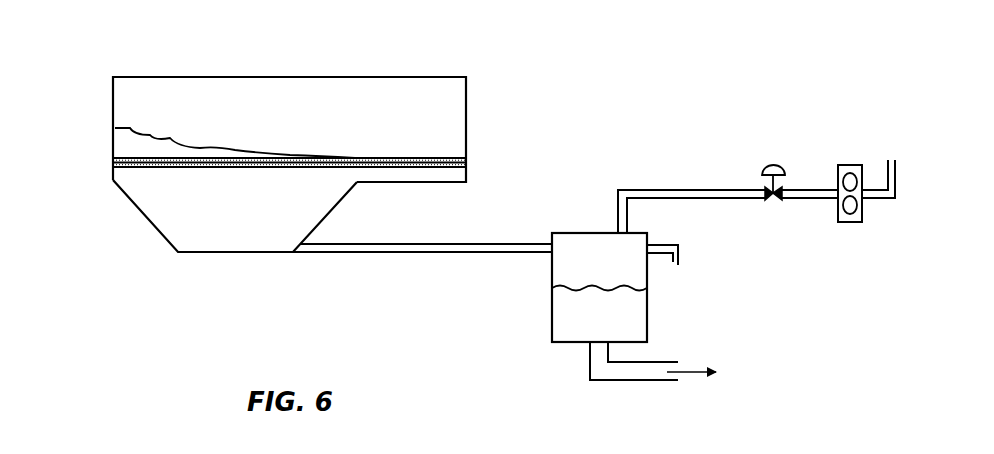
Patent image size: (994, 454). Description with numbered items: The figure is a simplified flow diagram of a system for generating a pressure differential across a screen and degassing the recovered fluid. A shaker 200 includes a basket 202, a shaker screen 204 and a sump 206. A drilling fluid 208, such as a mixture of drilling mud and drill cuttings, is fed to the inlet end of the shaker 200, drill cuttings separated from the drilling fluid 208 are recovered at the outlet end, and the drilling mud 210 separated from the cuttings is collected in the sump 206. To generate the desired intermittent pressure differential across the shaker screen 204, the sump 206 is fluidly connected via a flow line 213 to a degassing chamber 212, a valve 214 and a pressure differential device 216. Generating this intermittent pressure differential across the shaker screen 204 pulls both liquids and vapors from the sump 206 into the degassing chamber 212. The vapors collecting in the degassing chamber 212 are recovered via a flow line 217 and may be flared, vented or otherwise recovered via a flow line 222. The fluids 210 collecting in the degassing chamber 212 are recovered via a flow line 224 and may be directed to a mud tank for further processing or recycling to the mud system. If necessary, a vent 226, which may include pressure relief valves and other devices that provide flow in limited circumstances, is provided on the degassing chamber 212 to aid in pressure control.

The shaker 200 is at (118, 48).
The basket 202 is at (405, 77).
The shaker screen 204 is at (467, 163).
The sump 206 is at (142, 212).
The drilling fluid 208 is at (113, 150).
The drilling mud 210 is at (563, 312).
The degassing chamber 212 is at (552, 268).
The flow line 213 is at (452, 244).
The valve 214 is at (773, 164).
The pressure differential device 216 is at (850, 165).
The flow line 217 is at (692, 198).
The flow line 222 is at (883, 200).
The flow line 224 is at (648, 382).
The vent 226 is at (680, 257).